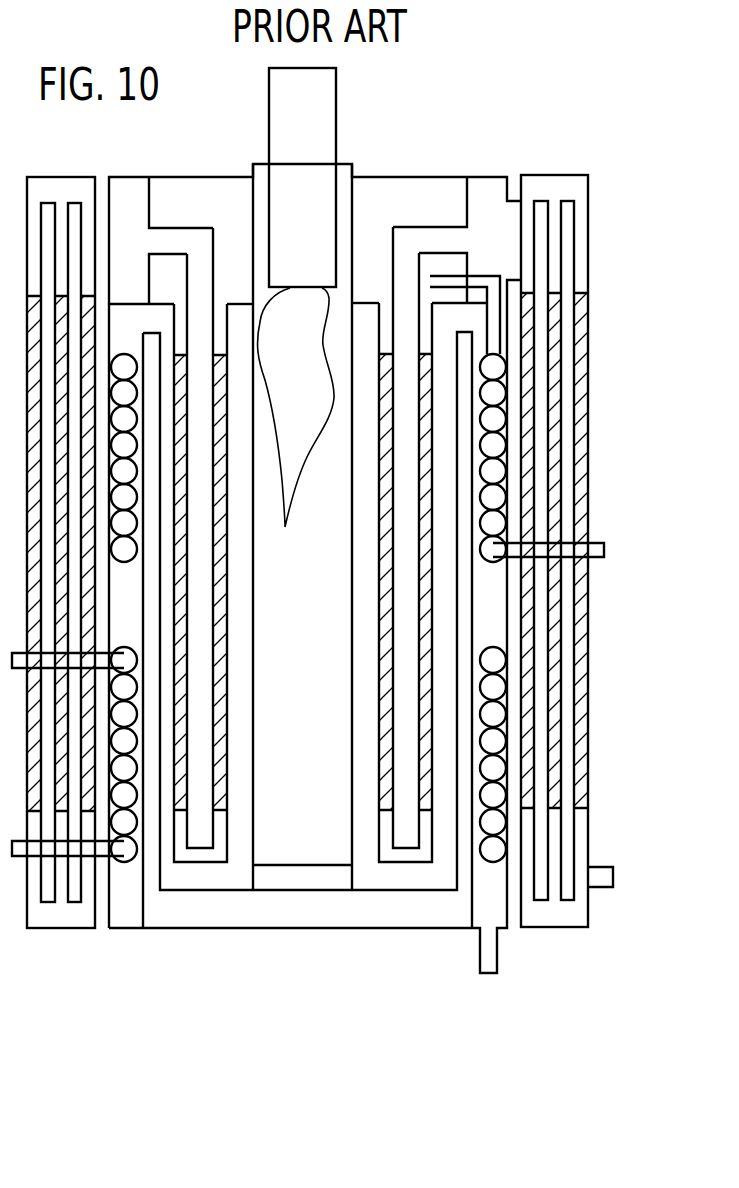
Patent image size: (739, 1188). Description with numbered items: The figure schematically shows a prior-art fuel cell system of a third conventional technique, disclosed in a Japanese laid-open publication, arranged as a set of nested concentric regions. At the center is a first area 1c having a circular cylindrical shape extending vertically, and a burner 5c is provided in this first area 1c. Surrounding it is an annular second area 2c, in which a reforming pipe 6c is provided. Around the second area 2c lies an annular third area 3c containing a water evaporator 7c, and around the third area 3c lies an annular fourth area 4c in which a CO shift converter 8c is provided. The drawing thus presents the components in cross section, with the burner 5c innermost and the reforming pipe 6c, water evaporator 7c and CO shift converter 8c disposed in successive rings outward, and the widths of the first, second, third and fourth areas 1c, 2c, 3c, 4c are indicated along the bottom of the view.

The first area 1c is at (352, 900).
The second area 2c is at (300, 674).
The third area 3c is at (507, 1115).
The fourth area 4c is at (578, 1119).
The burner 5c is at (322, 110).
The reforming pipe 6c is at (385, 778).
The water evaporator 7c is at (493, 688).
The CO shift converter 8c is at (583, 597).